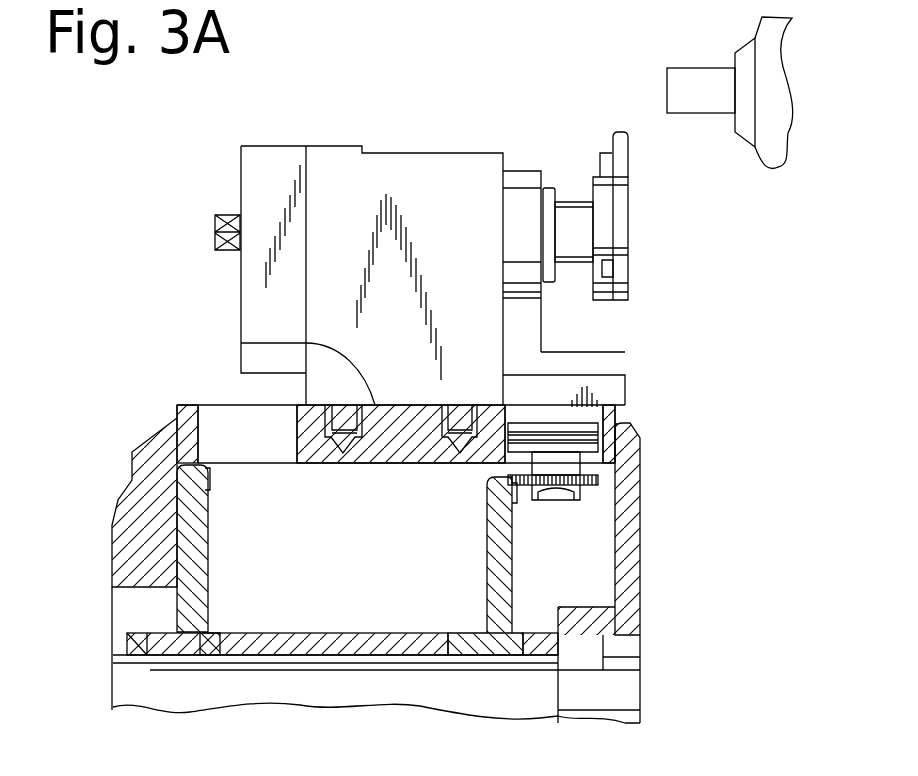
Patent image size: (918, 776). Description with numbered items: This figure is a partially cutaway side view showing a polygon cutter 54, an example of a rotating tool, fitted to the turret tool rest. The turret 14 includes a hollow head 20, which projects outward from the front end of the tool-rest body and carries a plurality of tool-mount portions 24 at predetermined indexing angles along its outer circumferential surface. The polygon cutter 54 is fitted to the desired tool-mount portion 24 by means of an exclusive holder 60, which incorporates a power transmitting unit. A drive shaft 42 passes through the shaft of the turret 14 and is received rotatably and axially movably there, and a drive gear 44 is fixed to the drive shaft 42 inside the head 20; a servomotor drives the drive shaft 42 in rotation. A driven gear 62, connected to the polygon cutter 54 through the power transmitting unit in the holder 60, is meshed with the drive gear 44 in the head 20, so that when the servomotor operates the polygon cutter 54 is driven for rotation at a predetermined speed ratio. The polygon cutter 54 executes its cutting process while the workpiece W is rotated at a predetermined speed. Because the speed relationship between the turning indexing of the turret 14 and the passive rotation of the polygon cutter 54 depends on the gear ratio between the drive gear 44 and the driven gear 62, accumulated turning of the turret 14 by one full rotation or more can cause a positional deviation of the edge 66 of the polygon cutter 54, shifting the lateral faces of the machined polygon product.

The turret 14 is at (640, 577).
The head 20 is at (222, 404).
The tool-mount portion 24 is at (243, 343).
The drive shaft 42 is at (292, 677).
The drive gear 44 is at (487, 537).
The polygon cutter 54 is at (597, 173).
The holder 60 is at (400, 177).
The driven gear 62 is at (598, 479).
The edge 66 is at (622, 132).
The workpiece W is at (690, 68).